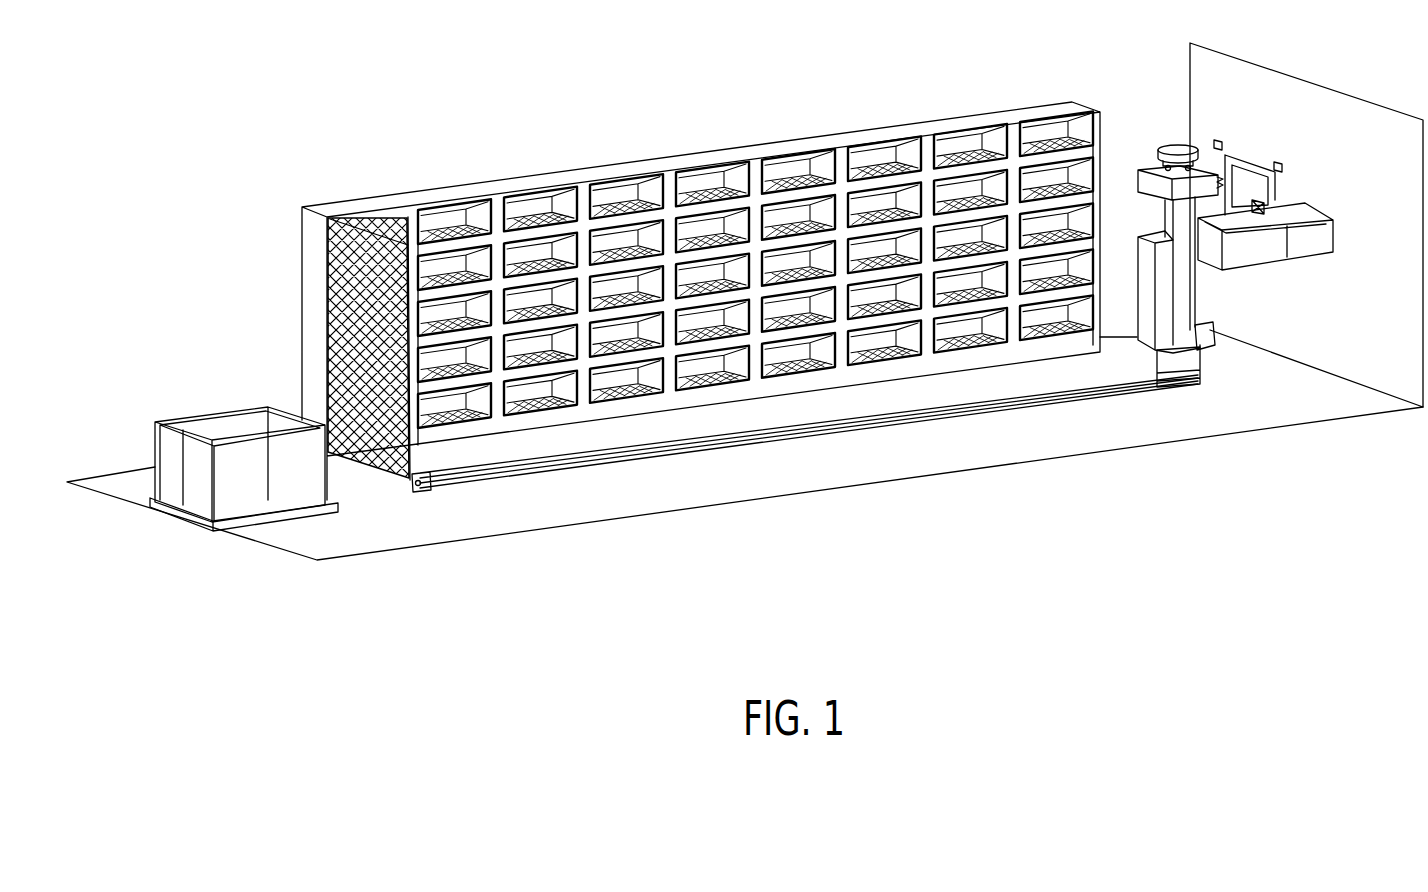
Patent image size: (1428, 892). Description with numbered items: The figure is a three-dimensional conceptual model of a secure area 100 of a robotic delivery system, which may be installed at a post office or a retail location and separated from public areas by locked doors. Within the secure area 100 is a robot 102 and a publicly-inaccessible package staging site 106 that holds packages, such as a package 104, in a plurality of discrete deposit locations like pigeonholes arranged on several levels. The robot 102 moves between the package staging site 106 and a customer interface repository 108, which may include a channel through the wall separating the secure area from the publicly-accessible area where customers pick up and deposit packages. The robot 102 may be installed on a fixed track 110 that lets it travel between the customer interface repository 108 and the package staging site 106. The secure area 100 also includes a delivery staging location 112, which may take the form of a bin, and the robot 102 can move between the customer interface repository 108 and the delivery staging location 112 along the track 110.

The secure area 100 is at (514, 570).
The robot 102 is at (1172, 147).
The package 104 is at (457, 218).
The package staging site 106 is at (701, 323).
The customer interface repository 108 is at (1260, 170).
The track 110 is at (672, 450).
The delivery staging location 112 is at (222, 410).